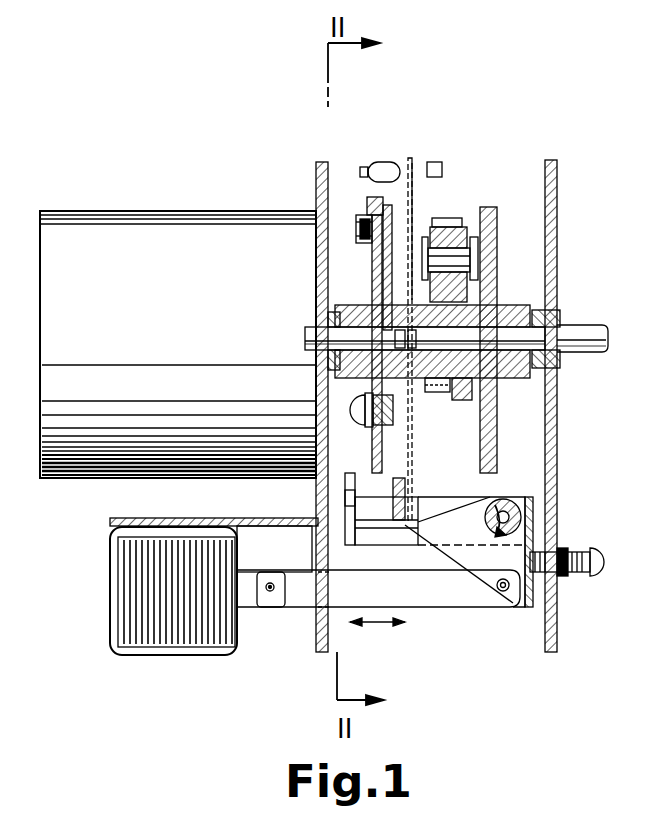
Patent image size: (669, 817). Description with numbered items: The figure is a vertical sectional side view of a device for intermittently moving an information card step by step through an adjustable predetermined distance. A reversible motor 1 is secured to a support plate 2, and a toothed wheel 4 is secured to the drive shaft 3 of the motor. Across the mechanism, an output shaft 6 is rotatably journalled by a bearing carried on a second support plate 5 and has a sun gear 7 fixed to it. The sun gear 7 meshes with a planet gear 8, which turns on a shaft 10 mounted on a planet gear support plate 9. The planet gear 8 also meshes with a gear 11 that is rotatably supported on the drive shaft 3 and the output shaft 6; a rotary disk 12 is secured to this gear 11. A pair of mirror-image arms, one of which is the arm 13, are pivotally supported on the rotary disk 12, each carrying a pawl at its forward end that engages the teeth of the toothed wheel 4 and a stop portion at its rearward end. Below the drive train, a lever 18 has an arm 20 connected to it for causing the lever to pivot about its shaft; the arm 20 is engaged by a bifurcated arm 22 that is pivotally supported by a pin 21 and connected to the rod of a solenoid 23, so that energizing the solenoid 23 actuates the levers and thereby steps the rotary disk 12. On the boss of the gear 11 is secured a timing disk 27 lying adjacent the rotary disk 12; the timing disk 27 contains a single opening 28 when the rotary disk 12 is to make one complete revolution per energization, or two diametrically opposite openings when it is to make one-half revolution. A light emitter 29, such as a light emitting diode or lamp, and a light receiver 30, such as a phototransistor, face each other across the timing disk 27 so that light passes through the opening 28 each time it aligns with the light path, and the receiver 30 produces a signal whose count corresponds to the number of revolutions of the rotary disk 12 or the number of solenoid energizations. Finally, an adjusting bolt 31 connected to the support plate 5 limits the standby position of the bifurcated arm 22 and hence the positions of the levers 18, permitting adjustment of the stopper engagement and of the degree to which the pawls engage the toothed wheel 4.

The reversible motor 1 is at (178, 225).
The support plate 2 is at (316, 185).
The drive shaft 3 is at (312, 338).
The toothed wheel 4 is at (372, 270).
The support plate 5 is at (557, 174).
The output shaft 6 is at (580, 330).
The sun gear 7 is at (470, 380).
The planet gear 8 is at (450, 228).
The planet gear support plate 9 is at (488, 207).
The shaft 10 is at (438, 262).
The gear 11 is at (420, 380).
The rotary disk 12 is at (386, 162).
The arm 13 is at (372, 198).
The lever 18 is at (382, 482).
The arm 20 is at (345, 497).
The pin 21 is at (527, 512).
The bifurcated arm 22 is at (452, 575).
The solenoid 23 is at (176, 645).
The timing disk 27 is at (408, 156).
The opening 28 is at (412, 158).
The light emitter 29 is at (366, 170).
The light receiver 30 is at (442, 168).
The adjusting bolt 31 is at (580, 578).